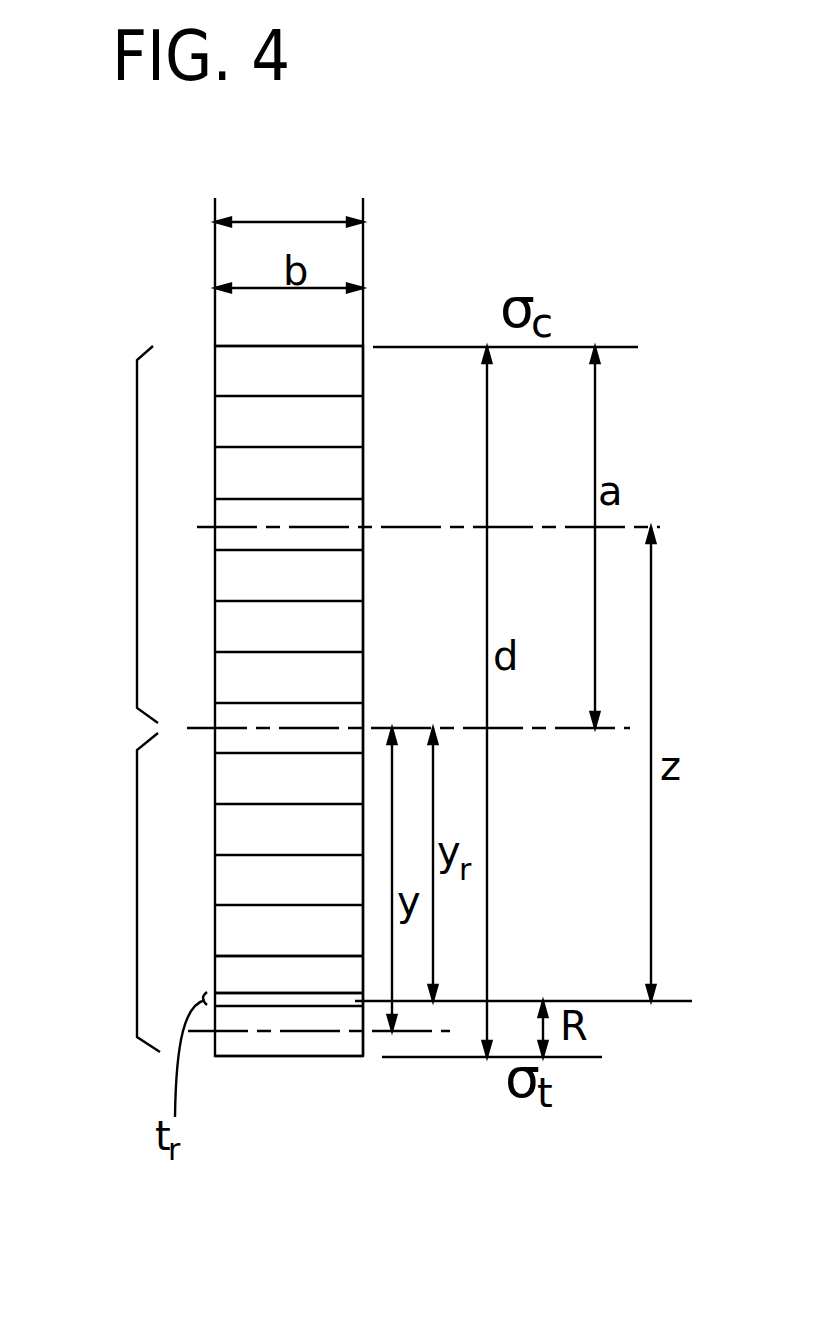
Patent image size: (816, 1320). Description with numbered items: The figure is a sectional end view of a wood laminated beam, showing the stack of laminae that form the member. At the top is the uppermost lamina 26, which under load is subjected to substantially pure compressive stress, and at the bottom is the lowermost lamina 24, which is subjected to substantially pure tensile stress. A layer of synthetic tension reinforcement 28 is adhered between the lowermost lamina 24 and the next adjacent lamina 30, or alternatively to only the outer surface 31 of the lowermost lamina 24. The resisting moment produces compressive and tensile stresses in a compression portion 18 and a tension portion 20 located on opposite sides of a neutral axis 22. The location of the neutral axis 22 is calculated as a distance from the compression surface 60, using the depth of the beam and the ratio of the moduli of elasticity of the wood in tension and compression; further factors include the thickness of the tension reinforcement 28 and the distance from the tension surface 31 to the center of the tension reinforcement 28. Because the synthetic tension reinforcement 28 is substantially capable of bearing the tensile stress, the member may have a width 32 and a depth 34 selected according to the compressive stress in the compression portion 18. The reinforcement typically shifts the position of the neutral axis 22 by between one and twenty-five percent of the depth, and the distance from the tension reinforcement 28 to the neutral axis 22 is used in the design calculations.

The compression portion 18 is at (137, 490).
The tension portion 20 is at (137, 882).
The neutral axis 22 is at (198, 740).
The lowermost lamina 24 is at (305, 1030).
The uppermost lamina 26 is at (237, 371).
The synthetic tension reinforcement 28 is at (257, 1000).
The next adjacent lamina 30 is at (268, 975).
The outer surface of lowermost lamina (tension surface) 31 is at (347, 1057).
The width 32 is at (292, 218).
The depth 34 is at (487, 512).
The compression surface 60 is at (353, 343).